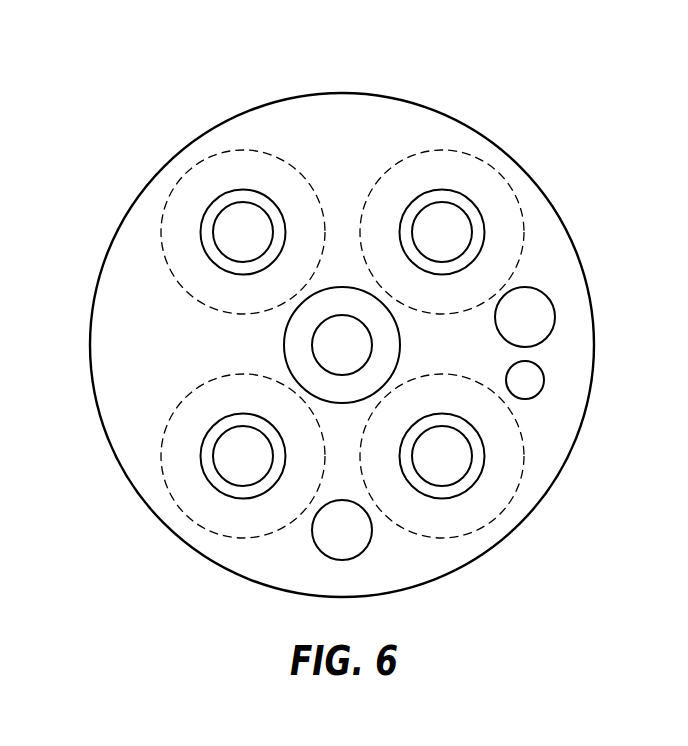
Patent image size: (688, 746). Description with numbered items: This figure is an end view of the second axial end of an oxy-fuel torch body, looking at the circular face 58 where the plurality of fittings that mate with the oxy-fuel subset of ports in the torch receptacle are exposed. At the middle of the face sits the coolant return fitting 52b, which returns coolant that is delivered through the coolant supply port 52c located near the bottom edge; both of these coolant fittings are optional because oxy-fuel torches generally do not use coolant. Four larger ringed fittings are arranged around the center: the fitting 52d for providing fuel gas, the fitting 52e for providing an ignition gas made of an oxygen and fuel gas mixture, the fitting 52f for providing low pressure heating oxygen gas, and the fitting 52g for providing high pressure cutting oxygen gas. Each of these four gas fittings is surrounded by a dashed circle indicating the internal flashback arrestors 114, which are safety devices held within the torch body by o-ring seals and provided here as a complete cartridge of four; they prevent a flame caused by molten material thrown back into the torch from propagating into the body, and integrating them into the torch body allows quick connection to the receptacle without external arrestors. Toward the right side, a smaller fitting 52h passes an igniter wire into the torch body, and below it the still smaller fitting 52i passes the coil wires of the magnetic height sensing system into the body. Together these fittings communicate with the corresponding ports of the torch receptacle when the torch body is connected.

The end plate 58 is at (305, 93).
The flashback arrestors 114 is at (440, 150).
The coolant return fitting 52b is at (284, 355).
The coolant supply port 52c is at (372, 537).
The fuel gas fitting 52d is at (228, 205).
The ignition gas fitting 52e is at (232, 484).
The low pressure heating oxygen fitting 52f is at (453, 484).
The high pressure cutting oxygen fitting 52g is at (453, 205).
The igniter wire fitting 52h is at (540, 291).
The coil wire fitting 52i is at (544, 364).